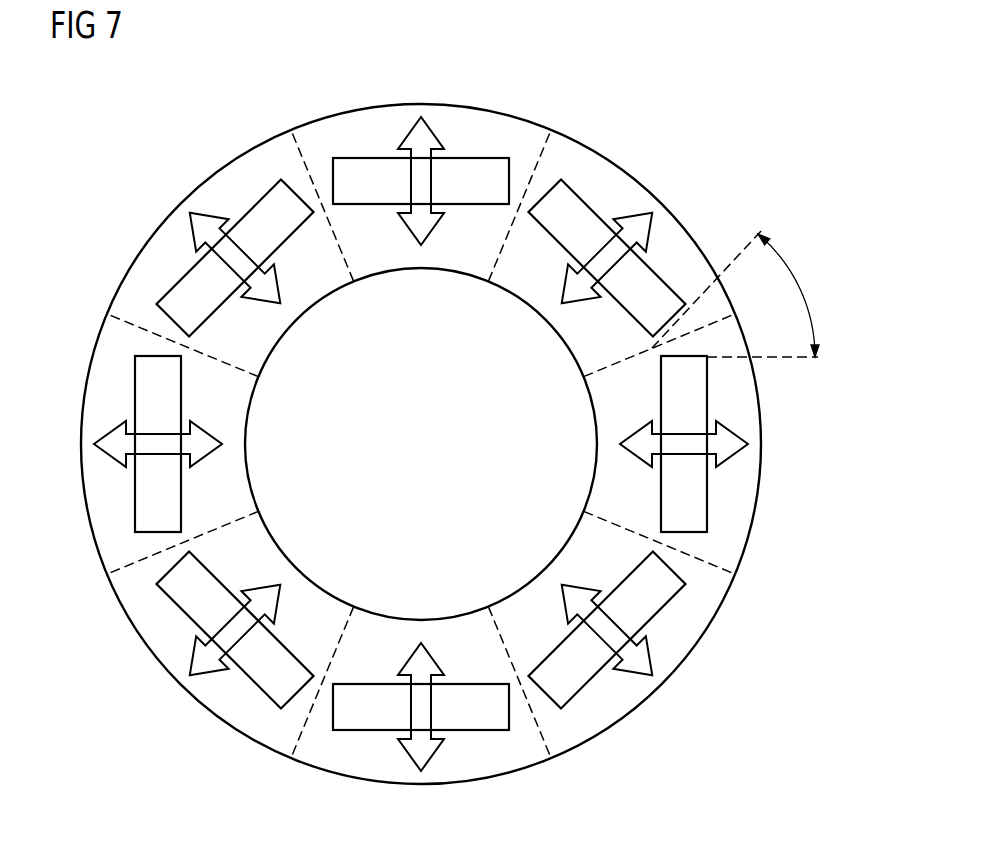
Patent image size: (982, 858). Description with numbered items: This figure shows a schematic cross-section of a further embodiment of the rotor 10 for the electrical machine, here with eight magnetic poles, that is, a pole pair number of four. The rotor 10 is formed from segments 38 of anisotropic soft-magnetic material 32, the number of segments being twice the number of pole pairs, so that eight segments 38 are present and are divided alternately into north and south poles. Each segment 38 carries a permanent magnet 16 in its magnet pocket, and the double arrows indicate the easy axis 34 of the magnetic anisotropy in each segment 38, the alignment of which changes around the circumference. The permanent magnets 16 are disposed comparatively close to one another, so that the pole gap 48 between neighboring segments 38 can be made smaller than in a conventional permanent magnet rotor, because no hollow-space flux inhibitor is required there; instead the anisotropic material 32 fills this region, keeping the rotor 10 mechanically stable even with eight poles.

The rotor 10 is at (604, 154).
The permanent magnet 16 is at (670, 423).
The material with magnetic anisotropy 32 is at (702, 347).
The easy axis 34 is at (641, 426).
The segment 38 is at (627, 190).
The pole gap 48 is at (783, 280).